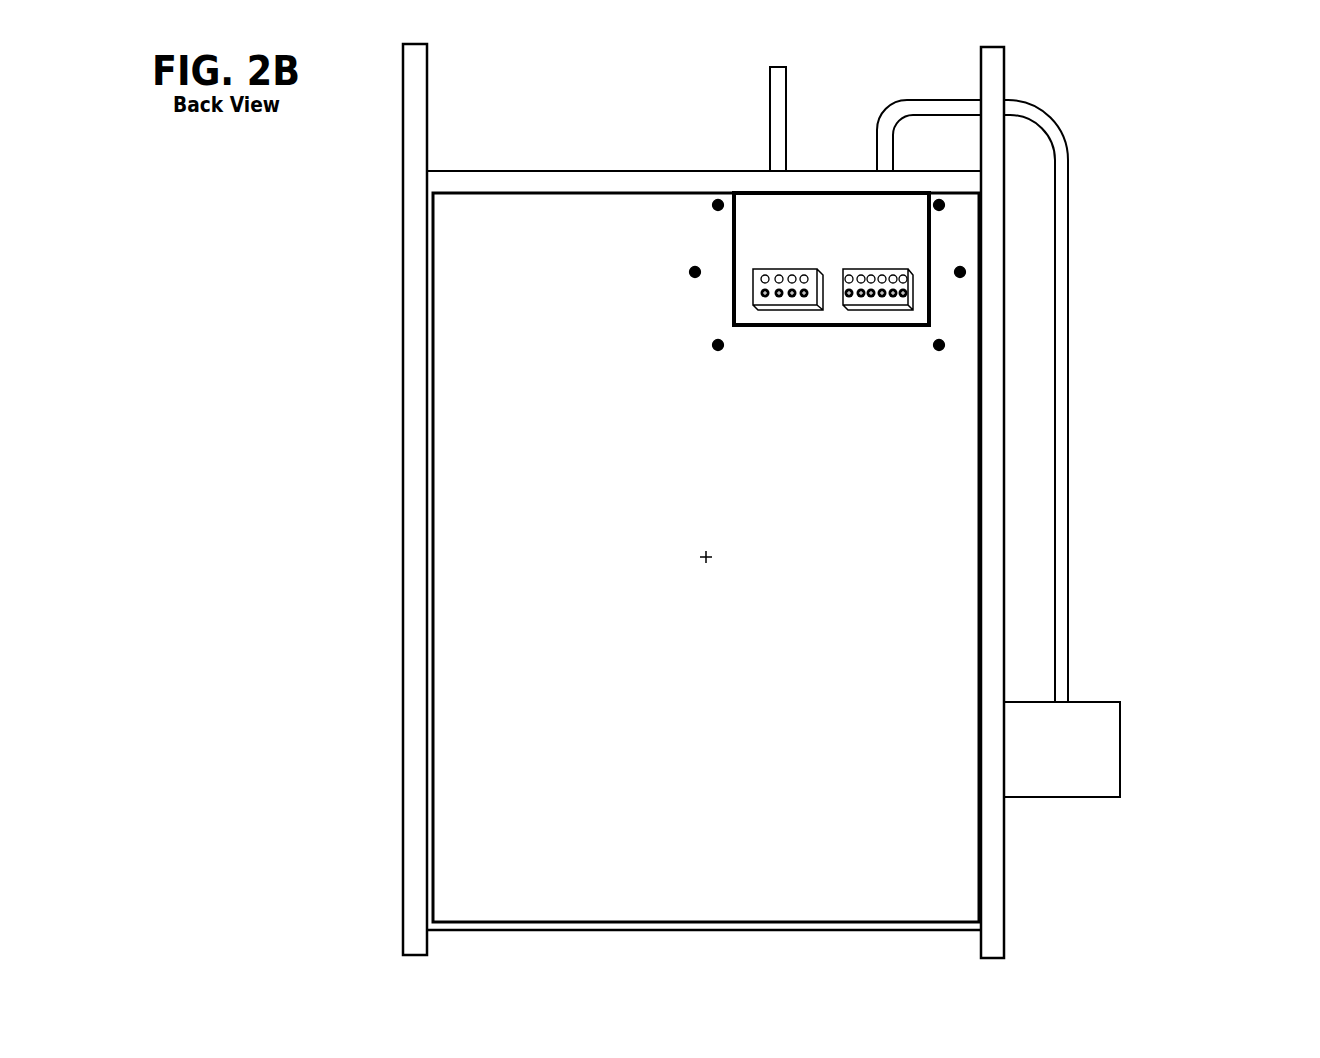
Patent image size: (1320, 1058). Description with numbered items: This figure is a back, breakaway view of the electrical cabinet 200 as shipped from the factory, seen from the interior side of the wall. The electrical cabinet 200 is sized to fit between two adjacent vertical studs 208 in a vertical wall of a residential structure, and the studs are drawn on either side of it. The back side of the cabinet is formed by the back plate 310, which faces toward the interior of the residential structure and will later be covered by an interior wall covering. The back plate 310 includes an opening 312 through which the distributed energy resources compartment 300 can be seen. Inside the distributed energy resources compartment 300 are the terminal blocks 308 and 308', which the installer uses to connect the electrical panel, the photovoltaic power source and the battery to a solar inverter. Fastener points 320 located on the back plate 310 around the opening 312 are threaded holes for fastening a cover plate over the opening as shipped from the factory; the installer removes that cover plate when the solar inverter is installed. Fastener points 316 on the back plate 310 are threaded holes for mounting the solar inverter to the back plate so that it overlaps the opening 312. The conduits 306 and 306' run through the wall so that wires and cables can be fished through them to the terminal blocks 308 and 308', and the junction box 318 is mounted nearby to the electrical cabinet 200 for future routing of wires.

The electrical cabinet 200 is at (465, 668).
The vertical studs 208 is at (1077, 877).
The distributed energy resources compartment 300 is at (765, 227).
The conduit 306 is at (702, 119).
The conduit 306' is at (1005, 397).
The terminal block 308 is at (788, 318).
The terminal block 308' is at (878, 318).
The back plate 310 is at (721, 751).
The opening 312 is at (733, 305).
The fastener points 316 is at (675, 271).
The junction box 318 is at (1120, 757).
The fastener points 320 is at (958, 340).